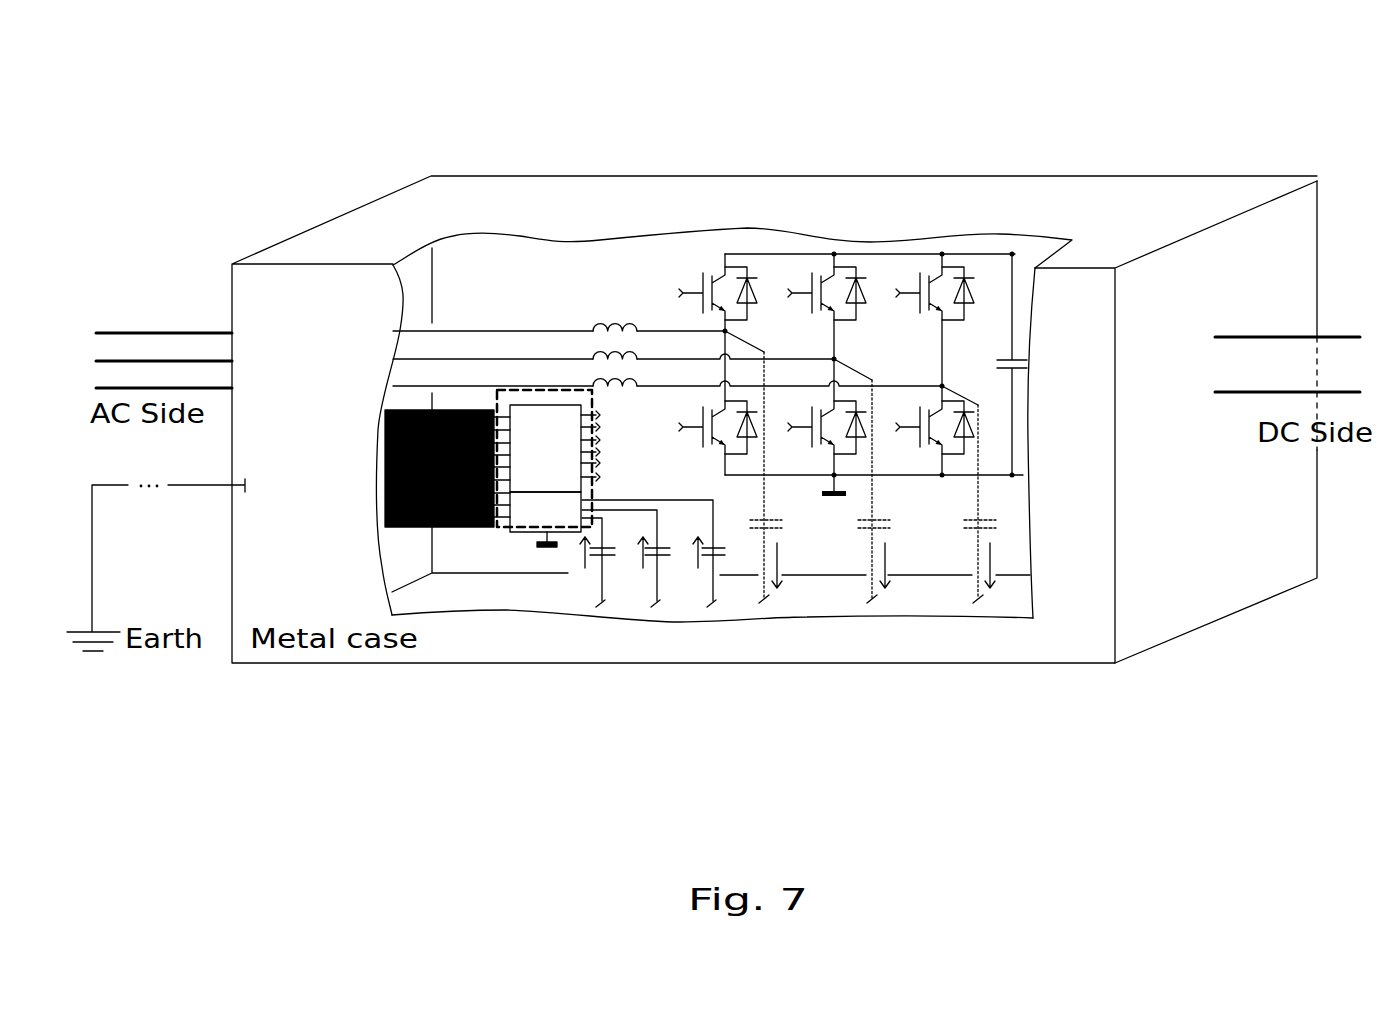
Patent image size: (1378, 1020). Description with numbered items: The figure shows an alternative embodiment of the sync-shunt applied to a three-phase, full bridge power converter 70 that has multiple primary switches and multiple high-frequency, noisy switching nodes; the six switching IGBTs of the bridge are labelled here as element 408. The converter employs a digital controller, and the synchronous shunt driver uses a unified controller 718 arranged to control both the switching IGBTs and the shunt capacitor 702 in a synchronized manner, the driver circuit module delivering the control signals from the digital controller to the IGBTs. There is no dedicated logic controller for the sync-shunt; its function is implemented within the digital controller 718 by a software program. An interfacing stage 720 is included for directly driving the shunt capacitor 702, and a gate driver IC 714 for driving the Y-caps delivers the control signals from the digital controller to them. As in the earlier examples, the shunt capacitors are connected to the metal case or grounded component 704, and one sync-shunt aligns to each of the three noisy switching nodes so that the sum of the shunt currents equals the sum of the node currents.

The power converter 70 is at (1266, 143).
The switching module (IGBT bridge) 408 is at (759, 260).
The unified controller 718 is at (522, 389).
The interfacing stage 720 is at (425, 527).
The gate driver IC 714 is at (536, 515).
The shunt capacitor 702 is at (726, 588).
The metal case or grounded component 704 is at (1270, 547).